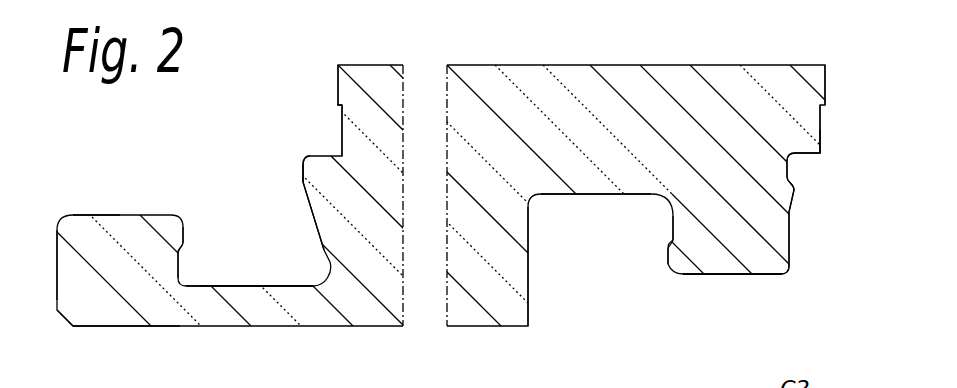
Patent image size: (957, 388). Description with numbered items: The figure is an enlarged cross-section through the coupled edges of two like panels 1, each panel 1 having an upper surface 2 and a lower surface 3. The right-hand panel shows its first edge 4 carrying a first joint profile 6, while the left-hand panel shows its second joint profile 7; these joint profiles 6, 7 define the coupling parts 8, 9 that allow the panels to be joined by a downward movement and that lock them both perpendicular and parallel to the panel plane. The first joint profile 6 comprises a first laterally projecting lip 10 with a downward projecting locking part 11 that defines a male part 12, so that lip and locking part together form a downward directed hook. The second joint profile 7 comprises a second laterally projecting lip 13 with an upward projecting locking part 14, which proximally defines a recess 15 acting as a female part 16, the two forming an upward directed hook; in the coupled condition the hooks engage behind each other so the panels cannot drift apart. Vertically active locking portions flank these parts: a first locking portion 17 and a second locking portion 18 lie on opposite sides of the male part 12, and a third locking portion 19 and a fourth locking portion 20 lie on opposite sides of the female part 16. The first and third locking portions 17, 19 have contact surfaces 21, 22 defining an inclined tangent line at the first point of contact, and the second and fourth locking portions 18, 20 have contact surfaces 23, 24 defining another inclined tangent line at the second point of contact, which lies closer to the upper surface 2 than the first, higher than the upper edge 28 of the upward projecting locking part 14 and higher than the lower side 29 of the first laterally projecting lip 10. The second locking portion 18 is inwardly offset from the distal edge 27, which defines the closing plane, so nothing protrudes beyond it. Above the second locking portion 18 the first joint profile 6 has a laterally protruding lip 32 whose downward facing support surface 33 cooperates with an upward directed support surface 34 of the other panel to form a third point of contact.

The panel 1 is at (482, 122).
The upper surface 2 is at (657, 65).
The lower surface 3 is at (125, 327).
The first edge 4 is at (830, 138).
The first joint profile 6 is at (800, 279).
The second joint profile 7 is at (190, 152).
The coupling part 8 is at (805, 216).
The coupling part 9 is at (233, 172).
The first laterally projecting lip 10 is at (613, 155).
The downward projecting locking part 11 is at (708, 262).
The male part 12 is at (758, 278).
The second laterally projecting lip 13 is at (248, 302).
The upward projecting locking part 14 is at (95, 240).
The recess 15 is at (222, 253).
The female part 16 is at (251, 190).
The first locking portion 17 is at (667, 252).
The second locking portion 18 is at (793, 186).
The third locking portion 19 is at (97, 298).
The fourth locking portion 20 is at (312, 167).
The contact surface 21 is at (672, 248).
The contact surface 22 is at (183, 245).
The contact surface 23 is at (790, 178).
The contact surface 24 is at (305, 184).
The distal edge 27 is at (828, 79).
The upper edge 28 is at (98, 214).
The lower side 29 is at (573, 195).
The laterally protruding lip 32 is at (820, 120).
The downward facing support surface 33 is at (797, 157).
The upward directed support surface 34 is at (323, 155).